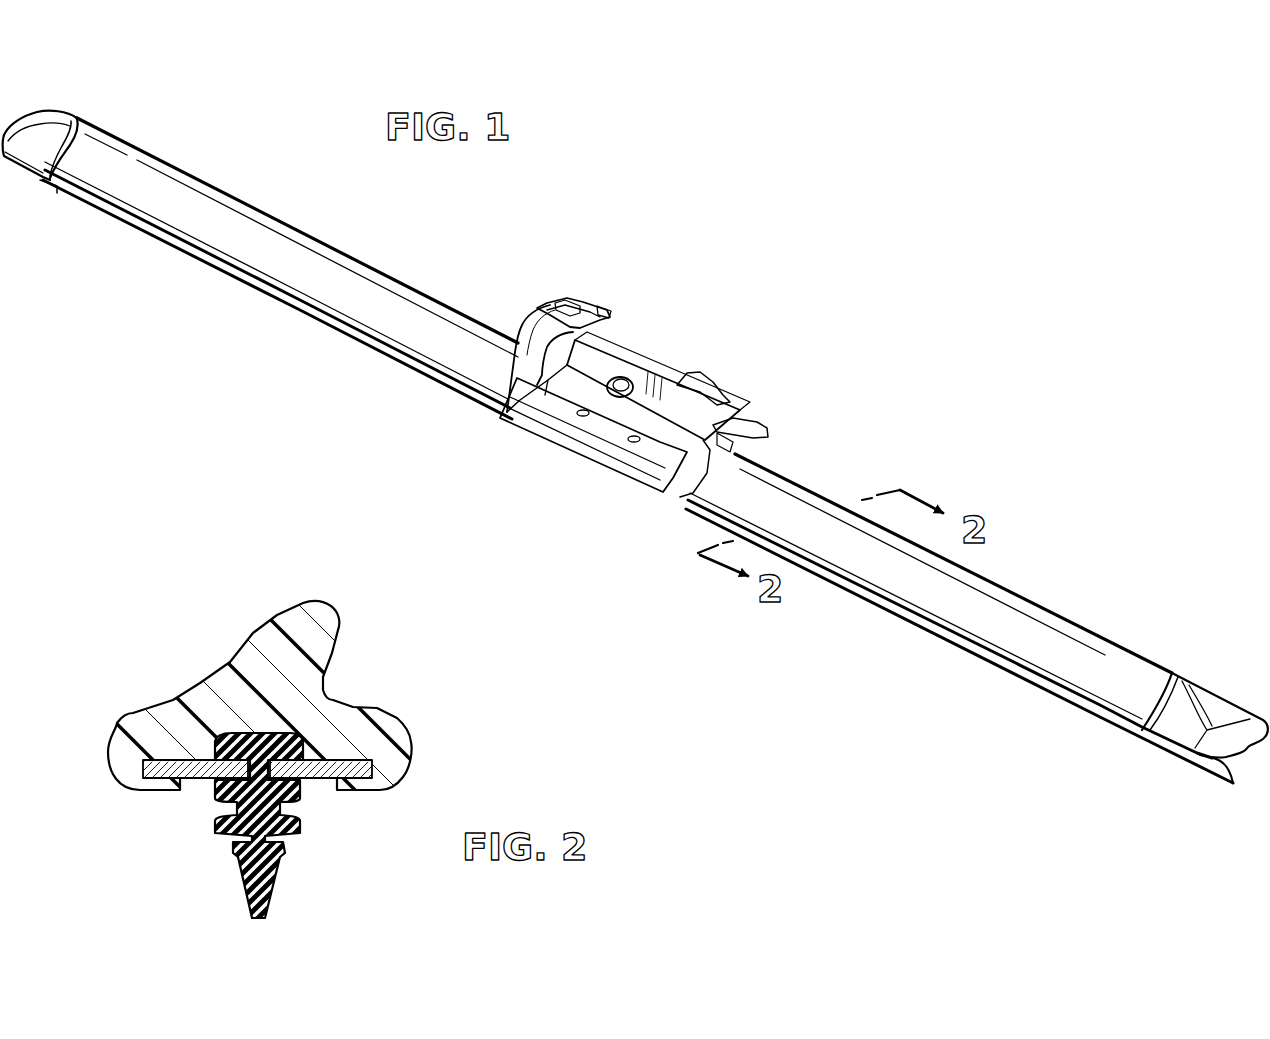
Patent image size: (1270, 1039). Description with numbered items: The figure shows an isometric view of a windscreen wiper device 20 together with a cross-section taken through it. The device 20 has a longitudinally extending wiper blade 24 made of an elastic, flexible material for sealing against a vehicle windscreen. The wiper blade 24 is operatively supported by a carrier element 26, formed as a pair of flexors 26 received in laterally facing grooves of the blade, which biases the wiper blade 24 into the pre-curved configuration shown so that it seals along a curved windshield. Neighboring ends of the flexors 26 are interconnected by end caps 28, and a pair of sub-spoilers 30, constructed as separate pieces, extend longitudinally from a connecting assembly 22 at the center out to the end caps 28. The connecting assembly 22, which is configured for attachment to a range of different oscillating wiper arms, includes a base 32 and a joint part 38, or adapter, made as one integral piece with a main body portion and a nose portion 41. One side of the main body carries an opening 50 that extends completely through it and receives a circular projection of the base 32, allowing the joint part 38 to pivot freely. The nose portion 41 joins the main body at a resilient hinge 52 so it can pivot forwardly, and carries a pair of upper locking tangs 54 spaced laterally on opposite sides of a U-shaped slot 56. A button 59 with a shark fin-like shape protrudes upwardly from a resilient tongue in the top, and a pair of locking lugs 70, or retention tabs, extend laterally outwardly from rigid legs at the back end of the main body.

In FIG. 1, the windscreen wiper device 20 is at (820, 440).
In FIG. 2, the windscreen wiper device 20 is at (158, 680).
In FIG. 1, the connecting assembly 22 is at (535, 313).
In FIG. 1, the wiper blade 24 is at (287, 303).
In FIG. 2, the wiper blade 24 is at (253, 880).
In FIG. 2, the carrier element 26 is at (193, 780).
In FIG. 1, the end caps 28 is at (60, 117).
In FIG. 1, the sub-spoilers 30 is at (172, 172).
In FIG. 2, the sub-spoilers 30 is at (267, 640).
In FIG. 1, the base 32 is at (623, 462).
In FIG. 1, the joint part 38 is at (578, 292).
In FIG. 1, the nose portion 41 is at (530, 332).
In FIG. 1, the opening 50 is at (613, 397).
In FIG. 1, the resilient hinge 52 is at (547, 372).
In FIG. 1, the upper locking tangs 54 is at (600, 302).
In FIG. 1, the U-shaped slot 56 is at (570, 300).
In FIG. 1, the button 59 is at (687, 373).
In FIG. 1, the locking lugs 70 is at (755, 420).